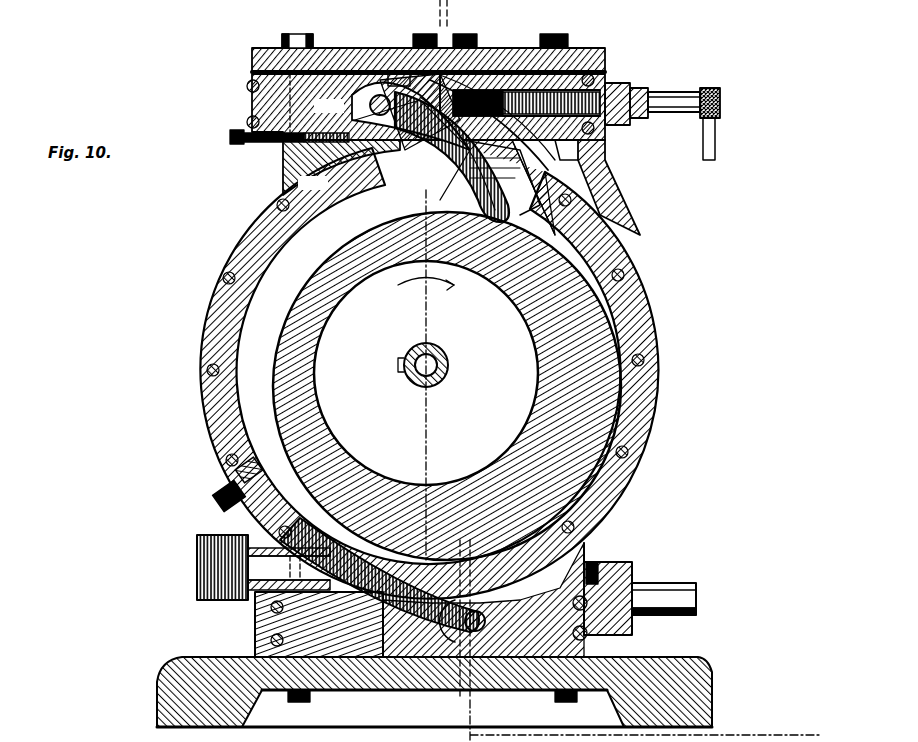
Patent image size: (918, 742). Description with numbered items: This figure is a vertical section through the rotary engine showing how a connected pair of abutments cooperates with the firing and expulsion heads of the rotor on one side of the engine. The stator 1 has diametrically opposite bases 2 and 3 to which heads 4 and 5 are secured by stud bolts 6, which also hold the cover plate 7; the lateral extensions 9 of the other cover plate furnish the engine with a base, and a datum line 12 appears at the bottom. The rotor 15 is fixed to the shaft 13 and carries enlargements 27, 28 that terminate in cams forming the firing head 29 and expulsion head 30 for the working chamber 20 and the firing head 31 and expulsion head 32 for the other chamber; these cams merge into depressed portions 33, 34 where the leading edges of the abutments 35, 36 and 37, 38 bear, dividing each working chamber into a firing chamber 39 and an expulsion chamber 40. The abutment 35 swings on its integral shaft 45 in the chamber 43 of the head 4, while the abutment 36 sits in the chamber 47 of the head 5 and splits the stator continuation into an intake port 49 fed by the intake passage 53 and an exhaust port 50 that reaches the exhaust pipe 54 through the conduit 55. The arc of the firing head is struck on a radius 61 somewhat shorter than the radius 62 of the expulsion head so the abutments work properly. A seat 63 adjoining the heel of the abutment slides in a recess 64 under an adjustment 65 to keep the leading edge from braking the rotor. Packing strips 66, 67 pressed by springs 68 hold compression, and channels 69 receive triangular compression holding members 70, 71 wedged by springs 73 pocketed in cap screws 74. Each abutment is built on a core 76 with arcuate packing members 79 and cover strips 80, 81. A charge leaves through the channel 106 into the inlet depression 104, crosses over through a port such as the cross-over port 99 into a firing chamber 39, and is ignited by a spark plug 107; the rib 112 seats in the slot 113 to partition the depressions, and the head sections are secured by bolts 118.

The stator 1 is at (655, 400).
The base 2 is at (283, 168).
The base 3 is at (588, 548).
The head 4 is at (290, 100).
The head 5 is at (292, 610).
The stud bolts 6 is at (294, 36).
The cover plate 7 is at (330, 55).
The lateral extensions 9 is at (700, 690).
The datum line 12 is at (641, 721).
The shaft 13 is at (440, 345).
The rotor 15 is at (609, 349).
The working chamber 20 is at (240, 242).
The enlargement 27 is at (632, 462).
The enlargement 28 is at (216, 266).
The firing head 29 is at (608, 282).
The expulsion head 30 is at (260, 510).
The firing head 31 is at (216, 434).
The expulsion head 32 is at (580, 202).
The depressed portion 33 is at (372, 256).
The depressed portion 34 is at (542, 482).
The abutment 35 is at (470, 150).
The abutment 36 is at (470, 630).
The abutment 37 is at (485, 268).
The abutment 38 is at (382, 522).
The firing chamber 39 is at (556, 242).
The expulsion chamber 40 is at (228, 350).
The chamber 43 is at (512, 60).
The shaft 45 is at (382, 95).
The chamber 47 is at (412, 650).
The intake port 49 is at (356, 510).
The exhaust port 50 is at (428, 562).
The intake passage 53 is at (262, 565).
The exhaust pipe 54 is at (670, 585).
The conduit 55 is at (500, 576).
The radius 61 is at (460, 385).
The radius 62 is at (420, 420).
The seat 63 is at (352, 150).
The recess 64 is at (362, 100).
The adjustment 65 is at (240, 140).
The packing strip 66 is at (472, 560).
The packing strip 67 is at (238, 470).
The spring 68 is at (216, 497).
The channel 69 is at (566, 150).
The compression holding member 70 is at (540, 55).
The compression holding member 71 is at (585, 60).
The spring 73 is at (505, 50).
The cap screw 74 is at (482, 60).
The core 76 is at (402, 124).
The arcuate packing member 79 is at (428, 140).
The cover strip 80 is at (440, 230).
The cover strip 81 is at (404, 224).
The cross-over port 99 is at (415, 70).
The inlet depression 104 is at (382, 208).
The channel 106 is at (406, 230).
The spark plug 107 is at (666, 100).
The rib 112 is at (330, 107).
The slot 113 is at (314, 184).
The bolts 118 is at (247, 86).